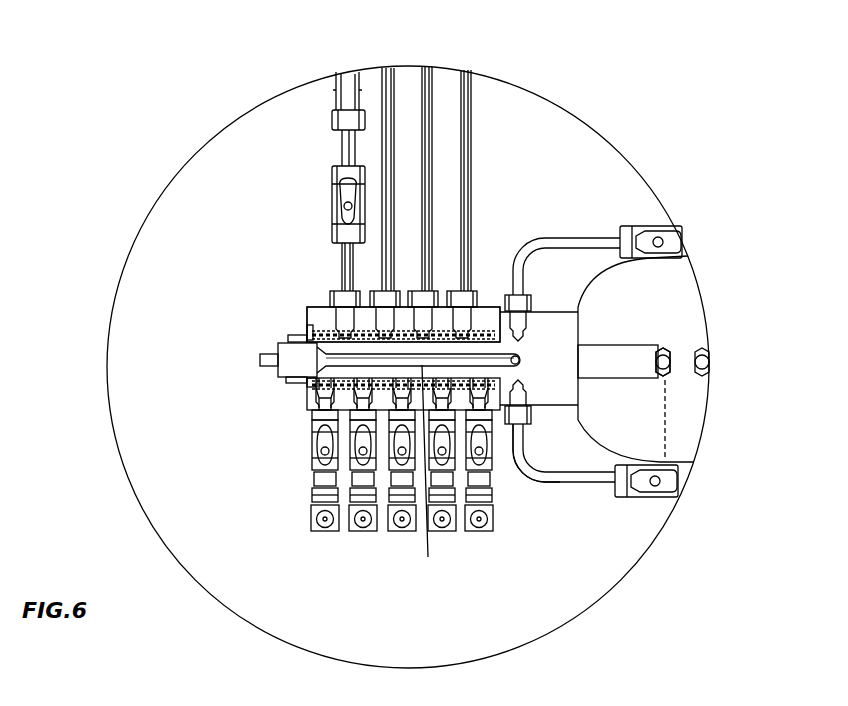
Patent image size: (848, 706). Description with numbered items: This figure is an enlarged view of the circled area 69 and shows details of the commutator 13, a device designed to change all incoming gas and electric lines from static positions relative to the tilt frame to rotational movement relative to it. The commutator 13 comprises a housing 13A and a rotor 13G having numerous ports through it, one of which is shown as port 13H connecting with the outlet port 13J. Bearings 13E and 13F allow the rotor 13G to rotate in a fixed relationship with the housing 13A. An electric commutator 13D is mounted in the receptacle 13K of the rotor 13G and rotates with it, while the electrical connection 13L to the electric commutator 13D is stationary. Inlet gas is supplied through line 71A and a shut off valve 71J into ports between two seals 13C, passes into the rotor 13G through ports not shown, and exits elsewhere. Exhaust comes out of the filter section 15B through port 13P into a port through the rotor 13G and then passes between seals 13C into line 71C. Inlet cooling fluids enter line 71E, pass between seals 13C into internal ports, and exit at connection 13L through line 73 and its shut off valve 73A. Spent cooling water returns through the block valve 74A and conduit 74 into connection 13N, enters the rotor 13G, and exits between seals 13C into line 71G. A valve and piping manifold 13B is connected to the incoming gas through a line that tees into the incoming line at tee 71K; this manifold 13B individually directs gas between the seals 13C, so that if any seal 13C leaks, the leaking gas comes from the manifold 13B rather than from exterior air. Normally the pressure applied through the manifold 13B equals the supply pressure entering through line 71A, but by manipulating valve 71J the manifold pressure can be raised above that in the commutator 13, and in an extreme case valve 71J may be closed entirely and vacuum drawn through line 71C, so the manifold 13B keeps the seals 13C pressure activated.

The commutator 13 is at (303, 298).
The housing 13A is at (315, 318).
The valve and piping manifold 13B is at (325, 533).
The seals 13C is at (315, 402).
The electric commutator 13D is at (290, 368).
The bearing 13E is at (316, 332).
The bearing 13F is at (523, 387).
The rotor 13G is at (565, 325).
The port 13H is at (448, 473).
The outlet port 13J is at (521, 363).
The receptacle 13K is at (318, 378).
The connection 13L is at (260, 359).
The connection 13N is at (510, 442).
The port 13P is at (668, 352).
The filter section 15B is at (688, 277).
The circled area 69 is at (630, 156).
The gas line 71A is at (345, 156).
The gas exhaust line 71C is at (387, 80).
The cooling water inlet line 71E is at (427, 72).
The cooling water exhaust line 71G is at (471, 76).
The shut off valve 71J is at (333, 205).
The tee 71K is at (345, 92).
The line 73 is at (568, 240).
The shut off valve 73A is at (638, 228).
The conduit 74 is at (597, 488).
The block valve 74A is at (683, 493).